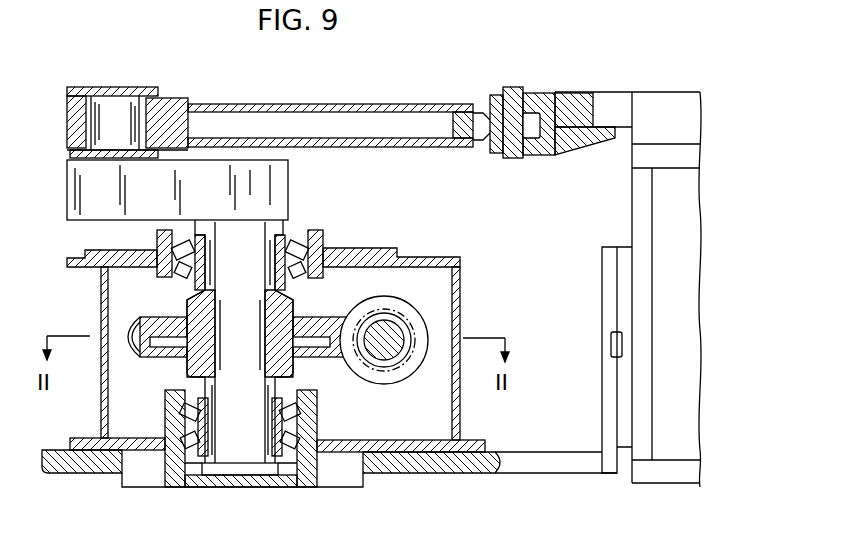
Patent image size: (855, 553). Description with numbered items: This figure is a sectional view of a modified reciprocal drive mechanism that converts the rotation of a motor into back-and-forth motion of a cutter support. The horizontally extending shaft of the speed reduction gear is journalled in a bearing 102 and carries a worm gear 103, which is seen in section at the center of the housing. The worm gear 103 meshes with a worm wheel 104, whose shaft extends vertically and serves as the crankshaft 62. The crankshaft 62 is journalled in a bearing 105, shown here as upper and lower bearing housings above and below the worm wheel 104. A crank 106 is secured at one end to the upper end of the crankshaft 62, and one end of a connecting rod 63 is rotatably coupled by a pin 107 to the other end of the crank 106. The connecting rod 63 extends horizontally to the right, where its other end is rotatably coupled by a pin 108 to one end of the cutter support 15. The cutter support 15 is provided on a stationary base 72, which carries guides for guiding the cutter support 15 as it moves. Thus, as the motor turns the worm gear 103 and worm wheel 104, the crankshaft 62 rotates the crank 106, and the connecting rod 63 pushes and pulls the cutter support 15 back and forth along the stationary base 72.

The cutter support 15 is at (645, 92).
The crankshaft 62 is at (285, 222).
The connecting rod 63 is at (330, 106).
The stationary base 72 is at (645, 162).
The bearing 102 is at (418, 323).
The worm gear 103 is at (402, 362).
The worm wheel 104 is at (350, 362).
The bearing 105 is at (323, 236).
The crank 106 is at (280, 184).
The pin 107 is at (121, 107).
The pin 108 is at (511, 87).